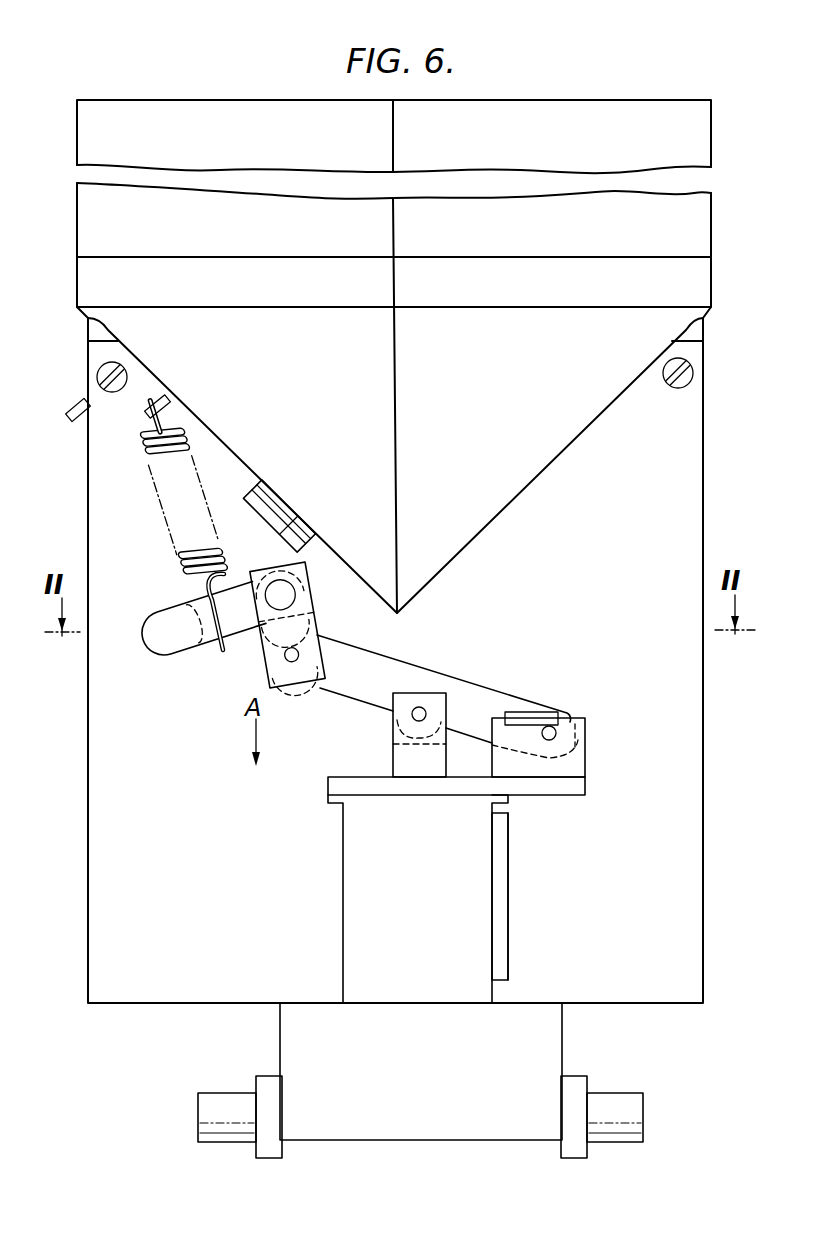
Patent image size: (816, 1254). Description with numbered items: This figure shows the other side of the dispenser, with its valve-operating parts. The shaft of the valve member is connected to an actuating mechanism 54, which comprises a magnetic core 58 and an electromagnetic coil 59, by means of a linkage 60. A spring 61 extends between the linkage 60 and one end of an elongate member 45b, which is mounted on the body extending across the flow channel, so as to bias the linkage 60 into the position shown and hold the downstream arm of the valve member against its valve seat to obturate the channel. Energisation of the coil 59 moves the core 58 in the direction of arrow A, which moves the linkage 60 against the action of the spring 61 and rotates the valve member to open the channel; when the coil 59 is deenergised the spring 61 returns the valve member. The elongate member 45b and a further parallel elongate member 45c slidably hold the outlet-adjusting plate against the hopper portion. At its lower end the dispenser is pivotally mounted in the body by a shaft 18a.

The shaft 18a is at (704, 1094).
The elongate member 45b is at (142, 422).
The further parallel elongate member 45c is at (336, 490).
The actuating mechanism 54 is at (594, 766).
The magnetic core 58 is at (393, 762).
The electromagnetic coil 59 is at (477, 878).
The linkage 60 is at (220, 697).
The spring 61 is at (178, 572).